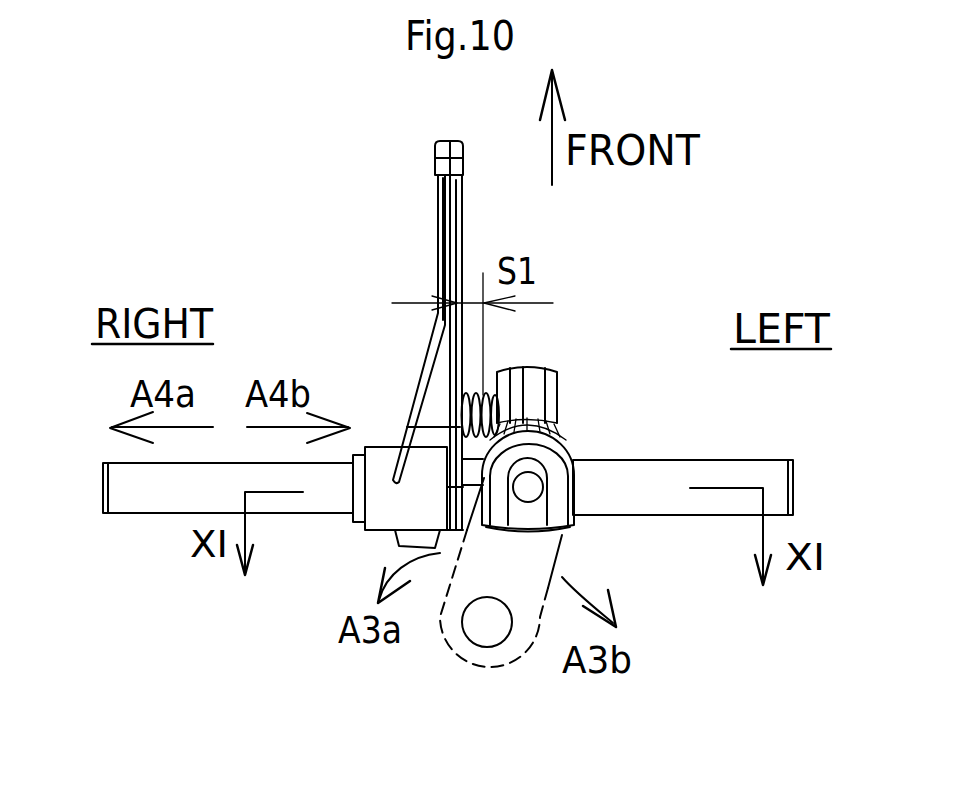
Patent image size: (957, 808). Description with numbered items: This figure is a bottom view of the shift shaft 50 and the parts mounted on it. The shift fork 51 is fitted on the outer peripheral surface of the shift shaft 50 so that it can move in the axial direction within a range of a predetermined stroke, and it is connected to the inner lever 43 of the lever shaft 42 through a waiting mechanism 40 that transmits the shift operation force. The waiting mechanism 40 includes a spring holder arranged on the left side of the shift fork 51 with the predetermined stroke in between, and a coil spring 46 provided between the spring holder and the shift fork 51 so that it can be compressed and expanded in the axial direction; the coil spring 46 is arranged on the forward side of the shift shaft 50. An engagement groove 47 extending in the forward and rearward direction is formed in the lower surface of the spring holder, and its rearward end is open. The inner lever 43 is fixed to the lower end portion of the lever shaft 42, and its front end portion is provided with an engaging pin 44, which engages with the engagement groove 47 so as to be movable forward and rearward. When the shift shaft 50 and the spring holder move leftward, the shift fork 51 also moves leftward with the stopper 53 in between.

The waiting mechanism 40 is at (546, 356).
The lever shaft 42 is at (491, 622).
The inner lever 43 is at (562, 547).
The engaging pin 44 is at (529, 487).
The coil spring 46 is at (484, 410).
The engagement groove 47 is at (547, 510).
The shift shaft 50 is at (170, 492).
The shift fork 51 is at (448, 263).
The stopper 53 is at (369, 523).